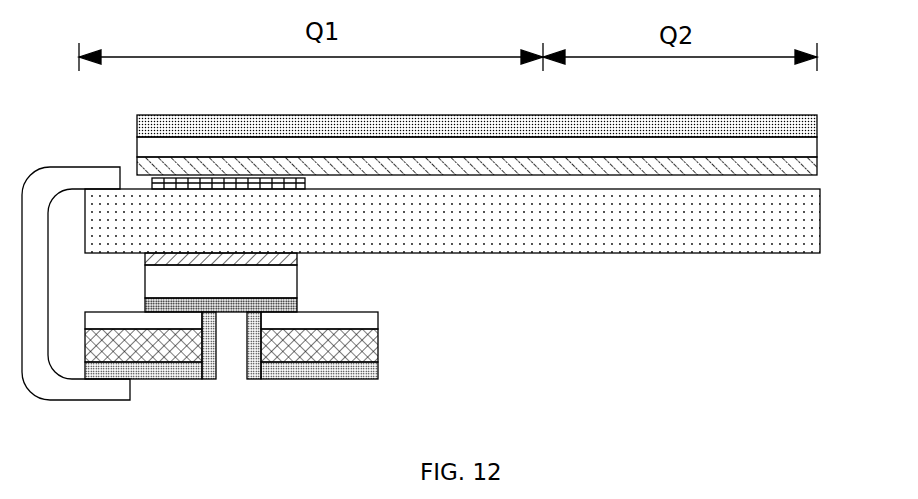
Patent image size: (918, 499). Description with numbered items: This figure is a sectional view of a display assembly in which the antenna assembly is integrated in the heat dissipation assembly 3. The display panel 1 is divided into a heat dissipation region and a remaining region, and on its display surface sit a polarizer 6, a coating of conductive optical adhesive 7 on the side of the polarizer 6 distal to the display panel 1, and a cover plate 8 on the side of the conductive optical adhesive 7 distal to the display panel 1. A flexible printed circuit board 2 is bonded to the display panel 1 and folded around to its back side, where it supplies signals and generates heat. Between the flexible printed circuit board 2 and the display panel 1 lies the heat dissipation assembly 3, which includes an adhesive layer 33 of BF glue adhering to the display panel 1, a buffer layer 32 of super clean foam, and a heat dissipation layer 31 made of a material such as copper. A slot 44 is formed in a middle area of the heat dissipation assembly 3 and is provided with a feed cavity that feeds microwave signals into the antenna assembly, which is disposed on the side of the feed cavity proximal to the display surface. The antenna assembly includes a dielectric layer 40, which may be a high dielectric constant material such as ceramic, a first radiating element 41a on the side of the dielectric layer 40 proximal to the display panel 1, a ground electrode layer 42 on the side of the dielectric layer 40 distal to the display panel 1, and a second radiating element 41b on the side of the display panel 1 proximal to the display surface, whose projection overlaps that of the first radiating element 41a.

The display panel 1 is at (802, 225).
The flexible printed circuit board 2 is at (120, 400).
The heat dissipation assembly 3 is at (304, 368).
The polarizer 6 is at (807, 163).
The conductive optical adhesive 7 is at (807, 143).
The cover plate 8 is at (807, 123).
The heat dissipation layer 31 is at (378, 372).
The buffer layer 32 is at (365, 353).
The adhesive layer 33 is at (365, 325).
The dielectric layer 40 is at (297, 285).
The first radiating element 41a is at (297, 257).
The second radiating element 41b is at (283, 189).
The ground electrode layer 42 is at (297, 305).
The opening 44 is at (228, 353).